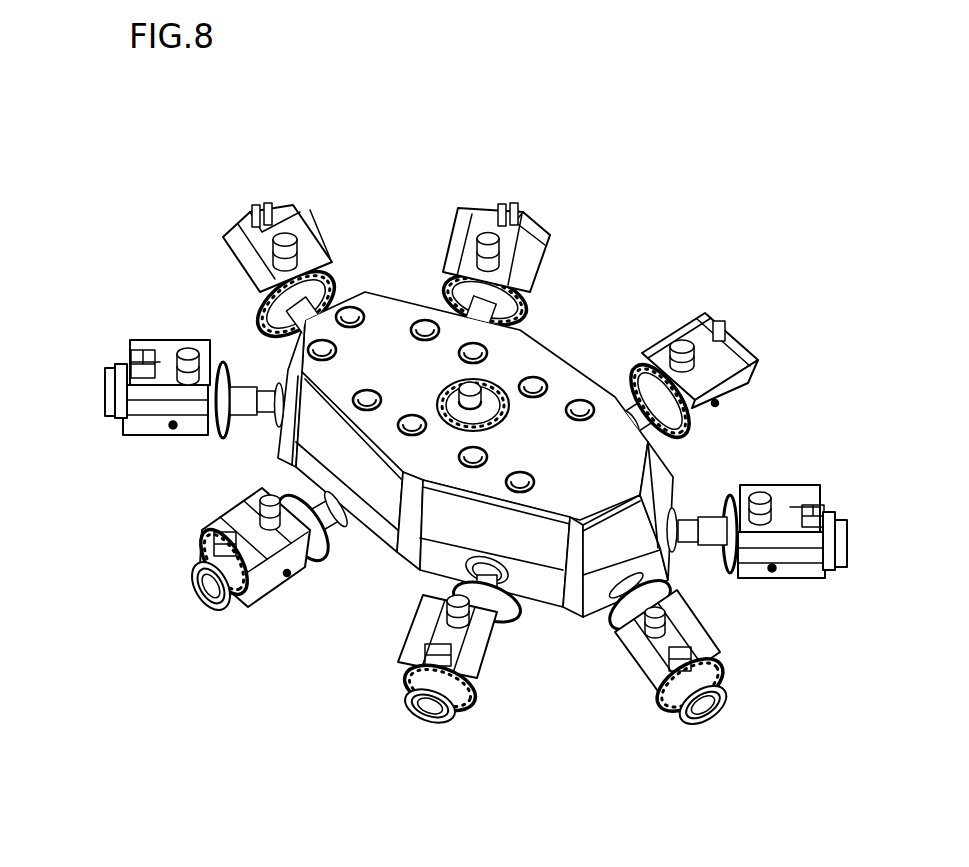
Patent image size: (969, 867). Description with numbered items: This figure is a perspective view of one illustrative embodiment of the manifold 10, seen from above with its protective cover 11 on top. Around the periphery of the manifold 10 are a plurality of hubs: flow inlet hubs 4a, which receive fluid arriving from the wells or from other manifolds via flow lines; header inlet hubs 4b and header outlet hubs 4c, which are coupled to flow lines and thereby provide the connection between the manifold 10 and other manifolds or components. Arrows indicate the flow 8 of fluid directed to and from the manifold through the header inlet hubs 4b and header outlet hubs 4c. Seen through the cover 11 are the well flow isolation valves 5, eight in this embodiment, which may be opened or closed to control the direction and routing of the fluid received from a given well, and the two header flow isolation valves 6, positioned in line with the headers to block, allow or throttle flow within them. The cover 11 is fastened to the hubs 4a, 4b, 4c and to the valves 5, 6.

The manifold 10 is at (711, 244).
The cover 11 is at (620, 462).
The well flow isolation valves 5 is at (590, 404).
The header flow isolation valves 6 is at (318, 347).
The flow inlet hubs 4a is at (559, 248).
The header inlet hubs 4b is at (291, 192).
The header outlet hubs 4c is at (826, 497).
The flow of fluid 8 is at (97, 379).